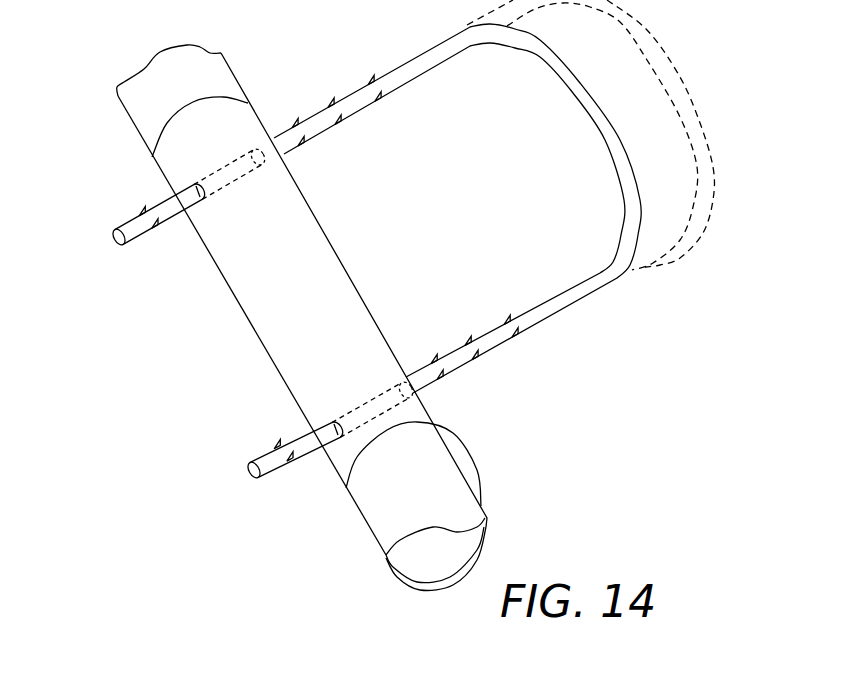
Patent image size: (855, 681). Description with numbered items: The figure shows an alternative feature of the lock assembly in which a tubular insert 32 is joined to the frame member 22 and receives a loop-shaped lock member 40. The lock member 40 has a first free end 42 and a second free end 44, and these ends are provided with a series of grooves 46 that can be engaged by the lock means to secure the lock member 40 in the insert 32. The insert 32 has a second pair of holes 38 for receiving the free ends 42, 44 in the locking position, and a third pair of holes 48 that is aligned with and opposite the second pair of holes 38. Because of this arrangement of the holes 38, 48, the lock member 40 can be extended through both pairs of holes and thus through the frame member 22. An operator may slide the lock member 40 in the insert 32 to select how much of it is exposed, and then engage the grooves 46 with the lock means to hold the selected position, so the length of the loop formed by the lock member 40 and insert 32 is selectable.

The frame member 22 is at (227, 78).
The tubular insert 32 is at (332, 268).
The second pair of holes 38 is at (262, 148).
The lock member 40 is at (584, 297).
The first free end 42 is at (119, 228).
The second free end 44 is at (266, 457).
The grooves 46 is at (152, 230).
The third pair of holes 48 is at (201, 192).